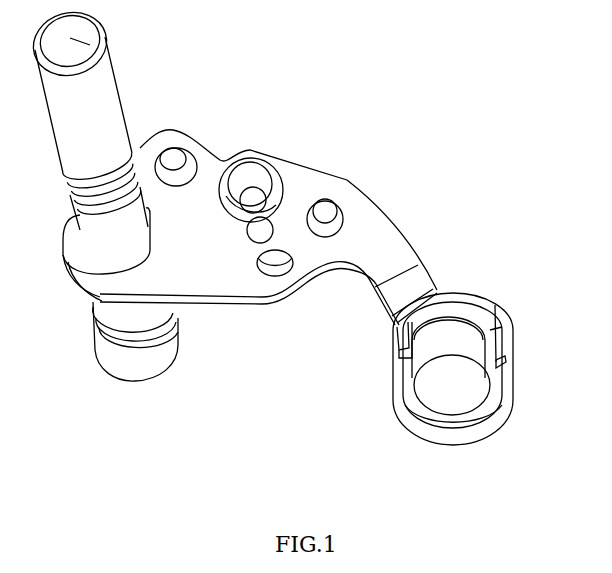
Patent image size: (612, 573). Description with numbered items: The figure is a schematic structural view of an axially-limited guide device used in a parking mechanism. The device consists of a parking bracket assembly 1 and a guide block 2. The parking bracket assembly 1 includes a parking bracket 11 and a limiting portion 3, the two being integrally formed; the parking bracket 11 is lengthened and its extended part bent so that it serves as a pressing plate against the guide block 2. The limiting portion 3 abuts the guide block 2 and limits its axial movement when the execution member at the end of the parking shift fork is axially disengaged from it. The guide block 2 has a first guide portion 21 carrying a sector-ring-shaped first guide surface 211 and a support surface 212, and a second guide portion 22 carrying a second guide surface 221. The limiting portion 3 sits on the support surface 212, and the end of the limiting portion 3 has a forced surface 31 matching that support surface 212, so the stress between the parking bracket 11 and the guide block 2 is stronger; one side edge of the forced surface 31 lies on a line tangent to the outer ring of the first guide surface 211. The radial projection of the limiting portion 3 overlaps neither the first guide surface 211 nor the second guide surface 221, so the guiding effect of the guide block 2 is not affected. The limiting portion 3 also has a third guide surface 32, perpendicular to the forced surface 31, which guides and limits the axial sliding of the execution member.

The parking bracket assembly 1 is at (230, 327).
The parking bracket 11 is at (258, 290).
The guide block 2 is at (420, 447).
The first guide portion 21 is at (508, 373).
The first guide surface 211 is at (494, 330).
The support surface 212 is at (508, 341).
The second guide portion 22 is at (477, 433).
The second guide surface 221 is at (407, 393).
The limiting portion 3 is at (437, 260).
The forced surface 31 is at (390, 317).
The third guide surface 32 is at (437, 293).